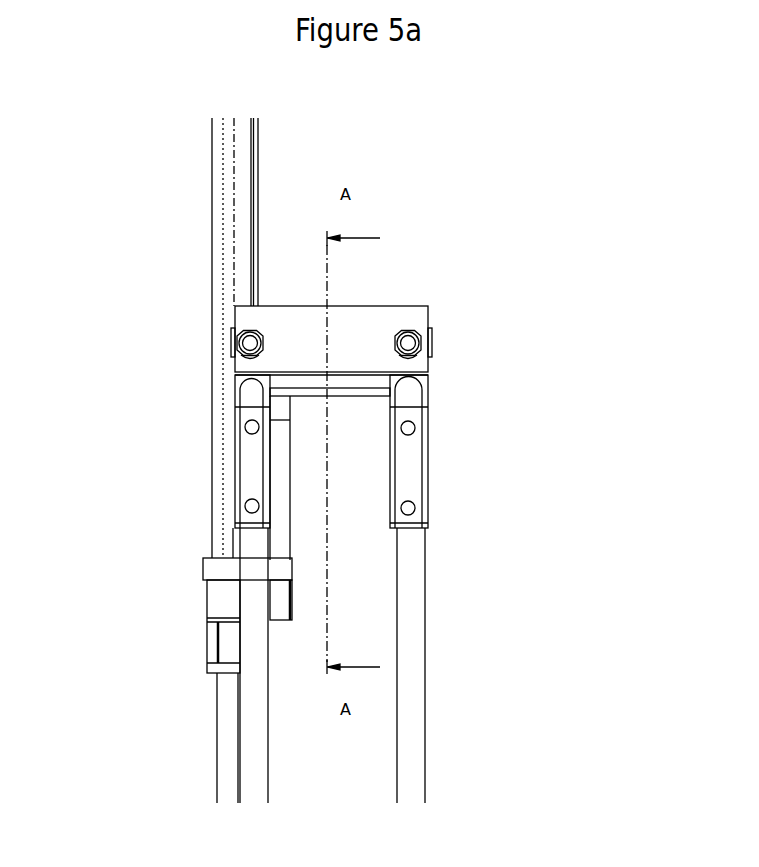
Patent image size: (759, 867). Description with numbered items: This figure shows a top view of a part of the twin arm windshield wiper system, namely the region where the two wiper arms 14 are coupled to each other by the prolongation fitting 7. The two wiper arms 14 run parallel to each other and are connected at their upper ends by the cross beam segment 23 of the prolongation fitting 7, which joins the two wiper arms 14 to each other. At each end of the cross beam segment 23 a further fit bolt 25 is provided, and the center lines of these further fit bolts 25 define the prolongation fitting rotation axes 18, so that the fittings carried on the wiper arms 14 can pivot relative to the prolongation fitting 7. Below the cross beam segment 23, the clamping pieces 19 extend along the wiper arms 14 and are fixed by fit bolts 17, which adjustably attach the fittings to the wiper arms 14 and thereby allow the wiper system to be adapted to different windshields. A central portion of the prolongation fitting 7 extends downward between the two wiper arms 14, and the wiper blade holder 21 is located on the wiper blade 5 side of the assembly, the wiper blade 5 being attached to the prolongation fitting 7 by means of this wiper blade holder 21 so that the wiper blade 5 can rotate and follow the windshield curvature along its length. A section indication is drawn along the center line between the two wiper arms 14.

The wiper blade 5 is at (223, 190).
The prolongation fitting 7 is at (290, 472).
The wiper arms 14 is at (405, 742).
The fit bolts 17 is at (248, 507).
The prolongation fitting rotation axes 18 is at (369, 360).
The clamping pieces 19 is at (428, 463).
The wiper blade holder 21 is at (208, 618).
The cross beam segment 23 is at (365, 320).
The further fit bolts 25 is at (248, 342).